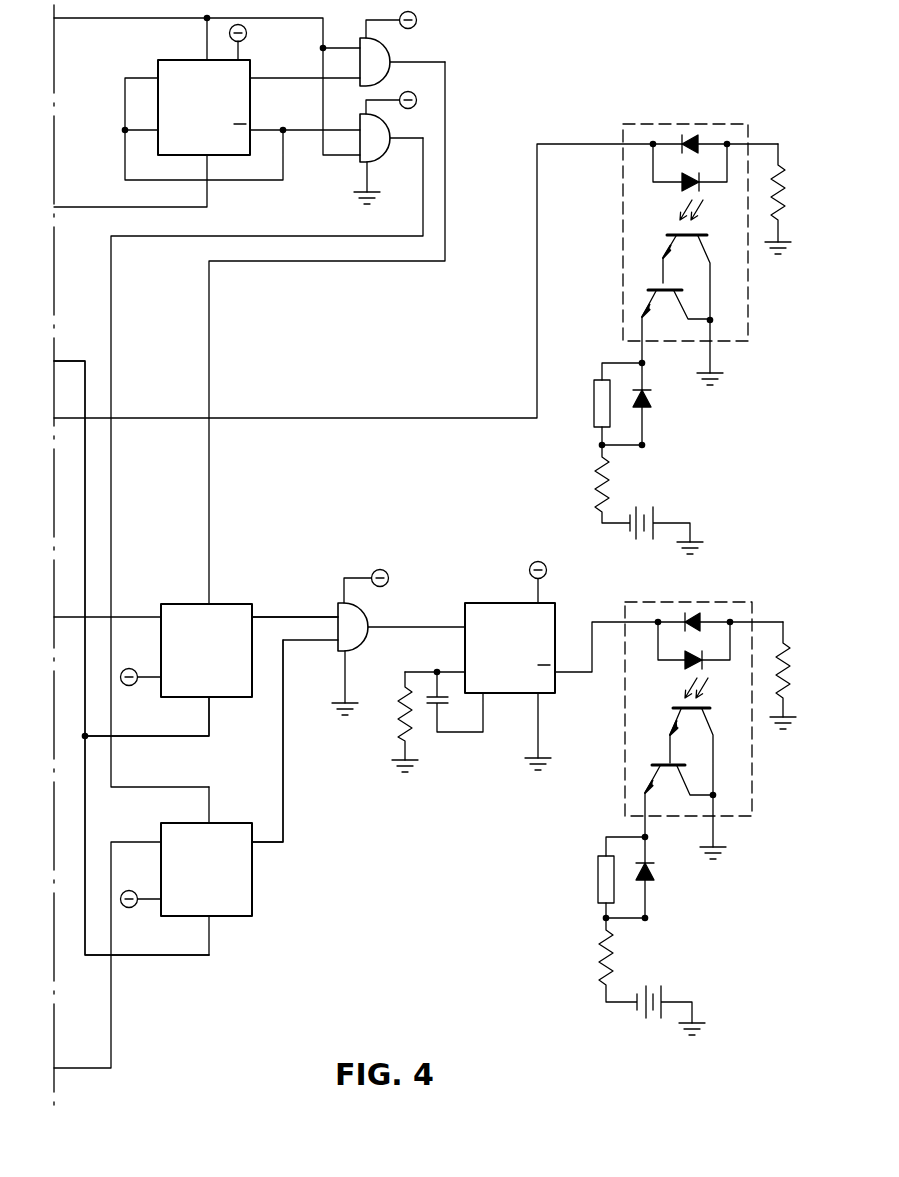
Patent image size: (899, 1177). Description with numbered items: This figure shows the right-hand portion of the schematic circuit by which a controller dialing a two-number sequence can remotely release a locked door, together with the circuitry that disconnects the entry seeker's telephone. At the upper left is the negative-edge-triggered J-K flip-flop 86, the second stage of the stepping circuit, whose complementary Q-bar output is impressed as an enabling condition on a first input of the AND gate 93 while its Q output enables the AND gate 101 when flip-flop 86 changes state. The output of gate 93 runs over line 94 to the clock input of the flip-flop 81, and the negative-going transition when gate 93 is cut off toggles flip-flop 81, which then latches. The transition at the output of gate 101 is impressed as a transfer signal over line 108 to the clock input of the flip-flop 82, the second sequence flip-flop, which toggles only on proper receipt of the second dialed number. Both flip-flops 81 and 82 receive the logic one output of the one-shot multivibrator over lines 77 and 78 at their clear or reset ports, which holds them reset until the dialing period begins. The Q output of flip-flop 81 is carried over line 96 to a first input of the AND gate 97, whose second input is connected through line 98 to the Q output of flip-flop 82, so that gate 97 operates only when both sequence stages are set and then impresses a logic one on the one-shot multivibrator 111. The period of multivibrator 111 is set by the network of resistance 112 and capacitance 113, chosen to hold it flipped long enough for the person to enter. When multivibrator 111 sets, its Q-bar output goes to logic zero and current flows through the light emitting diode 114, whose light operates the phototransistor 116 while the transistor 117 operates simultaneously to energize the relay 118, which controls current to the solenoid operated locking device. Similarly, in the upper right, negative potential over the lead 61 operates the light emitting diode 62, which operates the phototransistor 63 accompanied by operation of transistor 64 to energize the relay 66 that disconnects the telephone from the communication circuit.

The J-K flip-flop 86 is at (170, 58).
The AND gate 101 is at (388, 51).
The AND gate 93 is at (358, 160).
The line 108 is at (210, 363).
The line 94 is at (112, 465).
The lead 61 is at (407, 417).
The line 77 is at (85, 530).
The J-K flip-flop 82 is at (190, 604).
The line 98 is at (300, 615).
The line 78 is at (177, 738).
The line 96 is at (285, 772).
The AND gate 97 is at (372, 637).
The one-shot multivibrator 111 is at (485, 603).
The resistance 112 is at (400, 718).
The capacitance 113 is at (430, 705).
The light emitting diode 62 is at (683, 185).
The phototransistor 63 is at (692, 236).
The transistor 64 is at (650, 288).
The relay 66 is at (594, 412).
The light emitting diode 114 is at (683, 663).
The phototransistor 116 is at (697, 708).
The transistor 117 is at (655, 762).
The relay 118 is at (598, 878).
The J-K flip-flop 81 is at (252, 899).